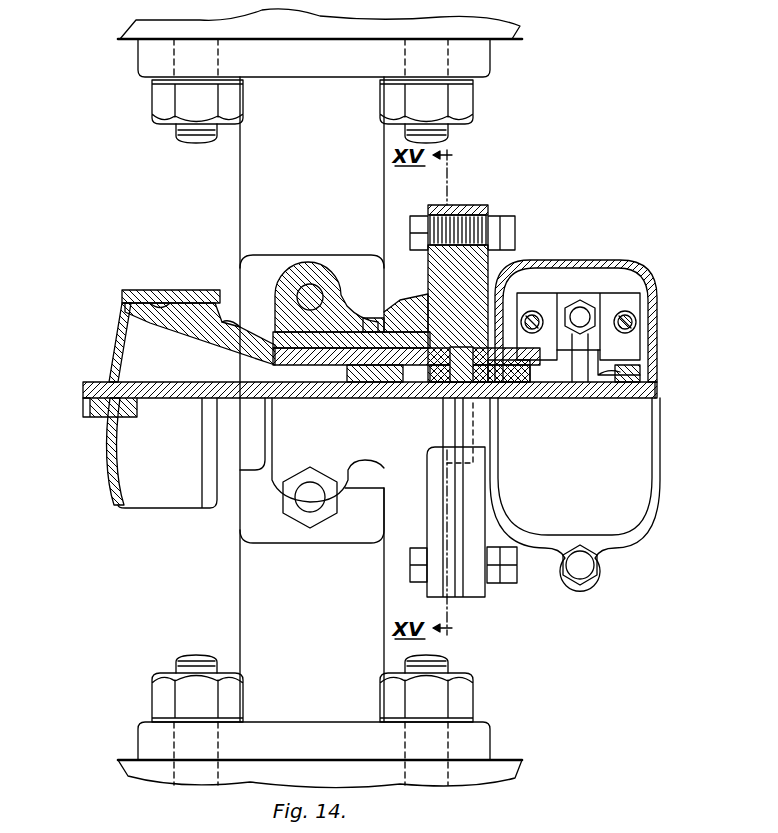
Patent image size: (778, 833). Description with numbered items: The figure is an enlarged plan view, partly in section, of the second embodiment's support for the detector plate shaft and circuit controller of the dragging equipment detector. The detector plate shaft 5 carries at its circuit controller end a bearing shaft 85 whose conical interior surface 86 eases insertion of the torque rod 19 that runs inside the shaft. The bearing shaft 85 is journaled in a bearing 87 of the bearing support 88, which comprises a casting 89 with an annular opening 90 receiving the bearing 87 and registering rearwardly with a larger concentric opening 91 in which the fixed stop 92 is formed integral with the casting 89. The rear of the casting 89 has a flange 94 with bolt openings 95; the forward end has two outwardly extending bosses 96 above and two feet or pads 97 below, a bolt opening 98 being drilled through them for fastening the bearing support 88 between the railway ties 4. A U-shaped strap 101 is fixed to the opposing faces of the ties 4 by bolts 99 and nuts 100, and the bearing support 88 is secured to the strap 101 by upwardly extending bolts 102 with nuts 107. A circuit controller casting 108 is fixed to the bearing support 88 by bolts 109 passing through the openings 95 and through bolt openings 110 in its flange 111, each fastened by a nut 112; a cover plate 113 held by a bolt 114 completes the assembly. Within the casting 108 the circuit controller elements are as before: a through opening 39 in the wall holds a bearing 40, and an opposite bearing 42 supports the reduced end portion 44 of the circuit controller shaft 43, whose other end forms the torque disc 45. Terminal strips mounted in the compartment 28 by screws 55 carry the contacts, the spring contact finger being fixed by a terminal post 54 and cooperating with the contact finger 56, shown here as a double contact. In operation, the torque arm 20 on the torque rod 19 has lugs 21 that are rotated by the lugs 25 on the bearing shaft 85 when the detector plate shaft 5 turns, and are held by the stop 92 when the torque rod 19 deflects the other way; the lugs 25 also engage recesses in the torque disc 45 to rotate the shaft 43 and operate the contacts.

The railway ties 4 is at (510, 39).
The detector plate shaft 5 is at (140, 292).
The torque rod 19 is at (96, 410).
The torque arm 20 is at (345, 398).
The lugs 21 is at (403, 398).
The lugs 25 is at (480, 292).
The annular compartment 28 is at (618, 290).
The through opening 39 is at (540, 398).
The bearing 40 is at (506, 398).
The bearing 42 is at (628, 372).
The circuit controller shaft 43 is at (592, 398).
The reduced end portion 44 is at (657, 395).
The torque disc 45 is at (440, 382).
The terminal post 54 is at (582, 312).
The screws 55 is at (536, 312).
The contact finger 56 is at (600, 358).
The bearing shaft 85 is at (208, 318).
The interior surface 86 is at (160, 303).
The bearing 87 is at (264, 332).
The bearing support 88 is at (193, 216).
The casting 89 is at (348, 332).
The annular opening 90 is at (364, 345).
The larger opening 91 is at (412, 306).
The fixed stop 92 is at (418, 400).
The flange 94 is at (430, 592).
The bolt openings 95 is at (447, 210).
The bosses 96 is at (282, 275).
The feet or pads 97 is at (260, 258).
The bolt opening 98 is at (309, 285).
The bolts 99 is at (176, 134).
The nuts 100 is at (160, 100).
The U-shaped strap 101 is at (292, 134).
The bolts 102 is at (314, 508).
The nuts 107 is at (306, 480).
The circuit controller casting 108 is at (640, 272).
The bolts 109 is at (410, 225).
The bolt openings 110 is at (495, 205).
The flange 111 is at (475, 210).
The nut 112 is at (515, 226).
The cover plate 113 is at (558, 458).
The bolt 114 is at (590, 568).